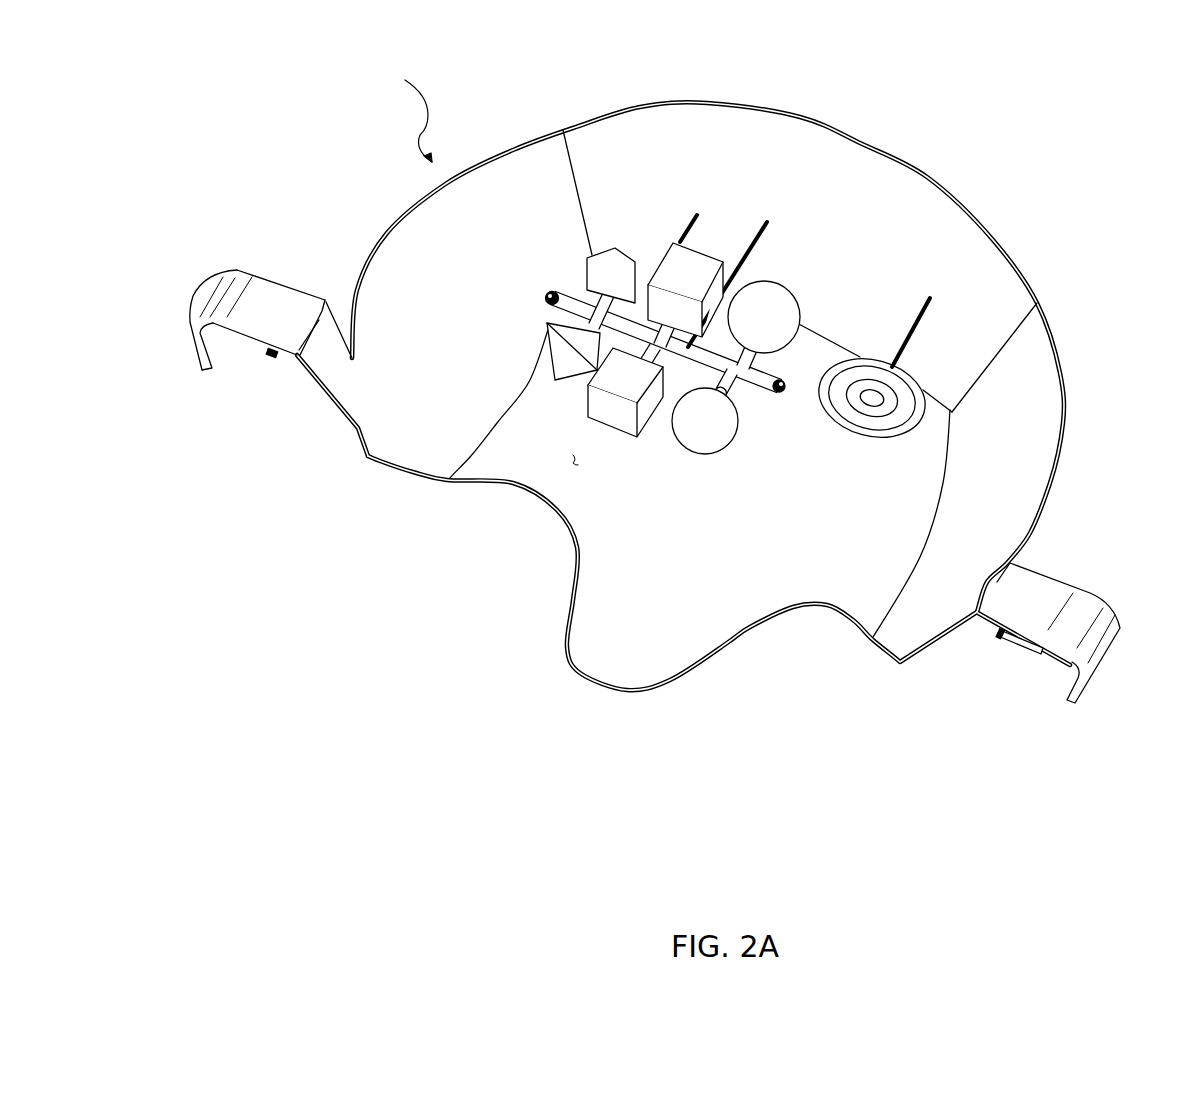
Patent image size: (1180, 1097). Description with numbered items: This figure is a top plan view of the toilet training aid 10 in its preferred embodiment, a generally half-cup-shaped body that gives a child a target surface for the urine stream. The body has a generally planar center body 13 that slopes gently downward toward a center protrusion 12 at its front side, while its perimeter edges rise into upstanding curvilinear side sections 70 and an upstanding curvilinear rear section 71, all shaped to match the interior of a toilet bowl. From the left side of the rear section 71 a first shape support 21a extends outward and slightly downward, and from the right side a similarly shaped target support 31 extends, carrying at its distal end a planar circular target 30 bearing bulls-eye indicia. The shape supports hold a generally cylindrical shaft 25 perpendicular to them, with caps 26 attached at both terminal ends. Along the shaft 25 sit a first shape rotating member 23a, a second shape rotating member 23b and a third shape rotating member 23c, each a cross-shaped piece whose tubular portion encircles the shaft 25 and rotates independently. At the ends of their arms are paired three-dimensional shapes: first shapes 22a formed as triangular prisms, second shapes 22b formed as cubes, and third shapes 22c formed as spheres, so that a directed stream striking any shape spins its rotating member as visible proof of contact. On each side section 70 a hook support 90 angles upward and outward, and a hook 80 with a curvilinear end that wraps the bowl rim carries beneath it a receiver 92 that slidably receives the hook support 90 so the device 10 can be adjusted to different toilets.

The toilet training aid 10 is at (402, 109).
The center protrusion 12 is at (723, 593).
The center body 13 is at (573, 462).
The first shape support 21a is at (574, 300).
The first shapes 22a is at (627, 260).
The second shapes 22b is at (681, 268).
The third shapes 22c is at (760, 297).
The first shape rotating member 23a is at (553, 381).
The second shape rotating member 23b is at (648, 350).
The third shape rotating member 23c is at (728, 377).
The shaft 25 is at (780, 383).
The caps 26 is at (542, 297).
The target 30 is at (903, 367).
The target support 31 is at (760, 338).
The curvilinear side section 70 is at (407, 258).
The curvilinear rear section 71 is at (933, 220).
The hook 80 is at (250, 268).
The hook support 90 is at (340, 371).
The receiver 92 is at (268, 353).